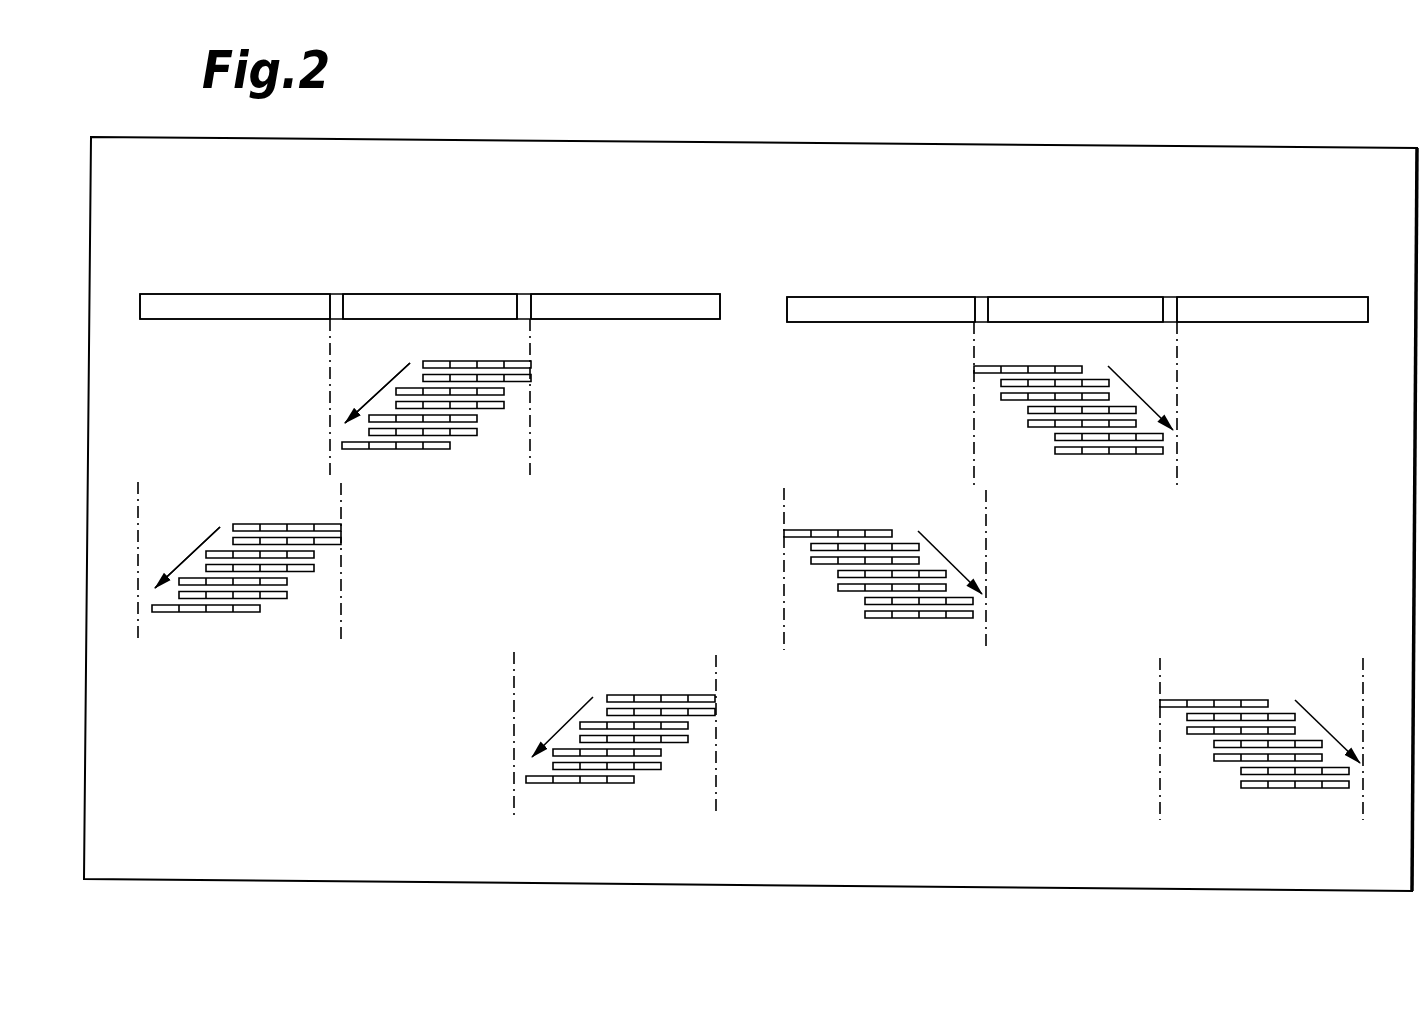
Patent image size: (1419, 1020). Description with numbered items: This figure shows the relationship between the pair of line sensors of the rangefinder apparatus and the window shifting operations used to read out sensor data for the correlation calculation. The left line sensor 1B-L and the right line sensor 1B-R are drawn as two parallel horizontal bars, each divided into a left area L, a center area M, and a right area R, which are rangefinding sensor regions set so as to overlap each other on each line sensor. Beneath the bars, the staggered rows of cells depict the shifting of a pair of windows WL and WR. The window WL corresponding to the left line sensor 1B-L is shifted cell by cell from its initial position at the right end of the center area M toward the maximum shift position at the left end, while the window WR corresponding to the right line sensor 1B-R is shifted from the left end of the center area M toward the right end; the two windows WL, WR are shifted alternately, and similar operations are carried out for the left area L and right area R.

The left line sensor 1B-L is at (484, 293).
The right line sensor 1B-R is at (1019, 296).
The left area L is at (234, 300).
The center area M is at (383, 300).
The right area R is at (619, 305).
The window WL is at (275, 523).
The window WR is at (826, 529).